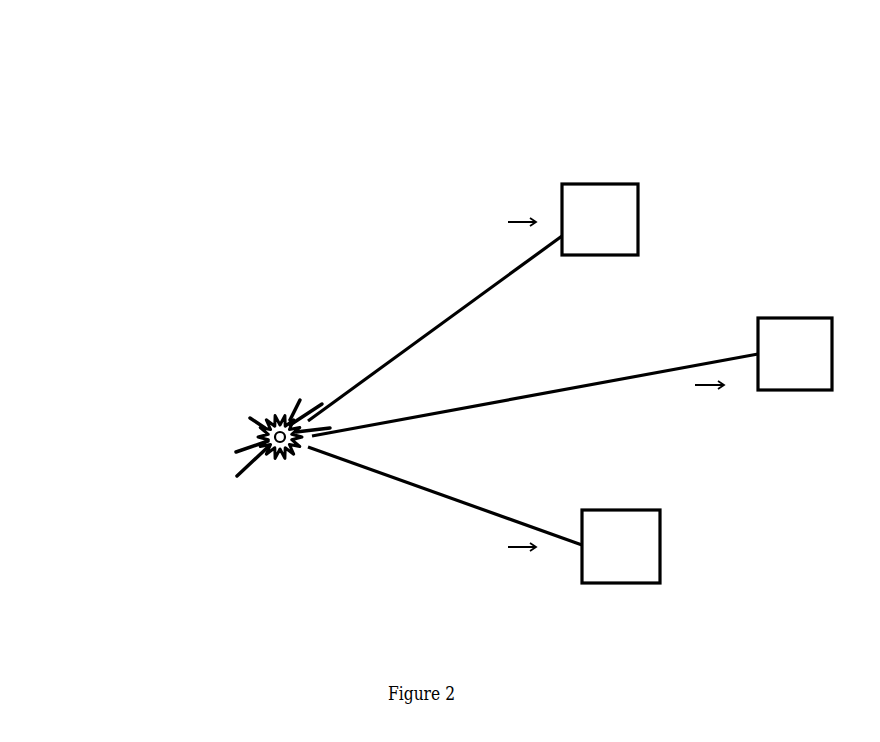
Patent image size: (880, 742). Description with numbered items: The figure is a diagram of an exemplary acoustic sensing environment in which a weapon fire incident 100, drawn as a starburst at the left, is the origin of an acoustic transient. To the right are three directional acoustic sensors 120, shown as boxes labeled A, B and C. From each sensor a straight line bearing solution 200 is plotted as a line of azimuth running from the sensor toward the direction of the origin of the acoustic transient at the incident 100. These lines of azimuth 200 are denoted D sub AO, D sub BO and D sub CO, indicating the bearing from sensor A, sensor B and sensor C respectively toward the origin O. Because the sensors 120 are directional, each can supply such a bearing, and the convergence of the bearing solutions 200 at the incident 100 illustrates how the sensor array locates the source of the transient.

The weapon fire incident 100 is at (270, 396).
The acoustic sensors 120 is at (666, 298).
The straight line bearing solutions 200 is at (529, 391).